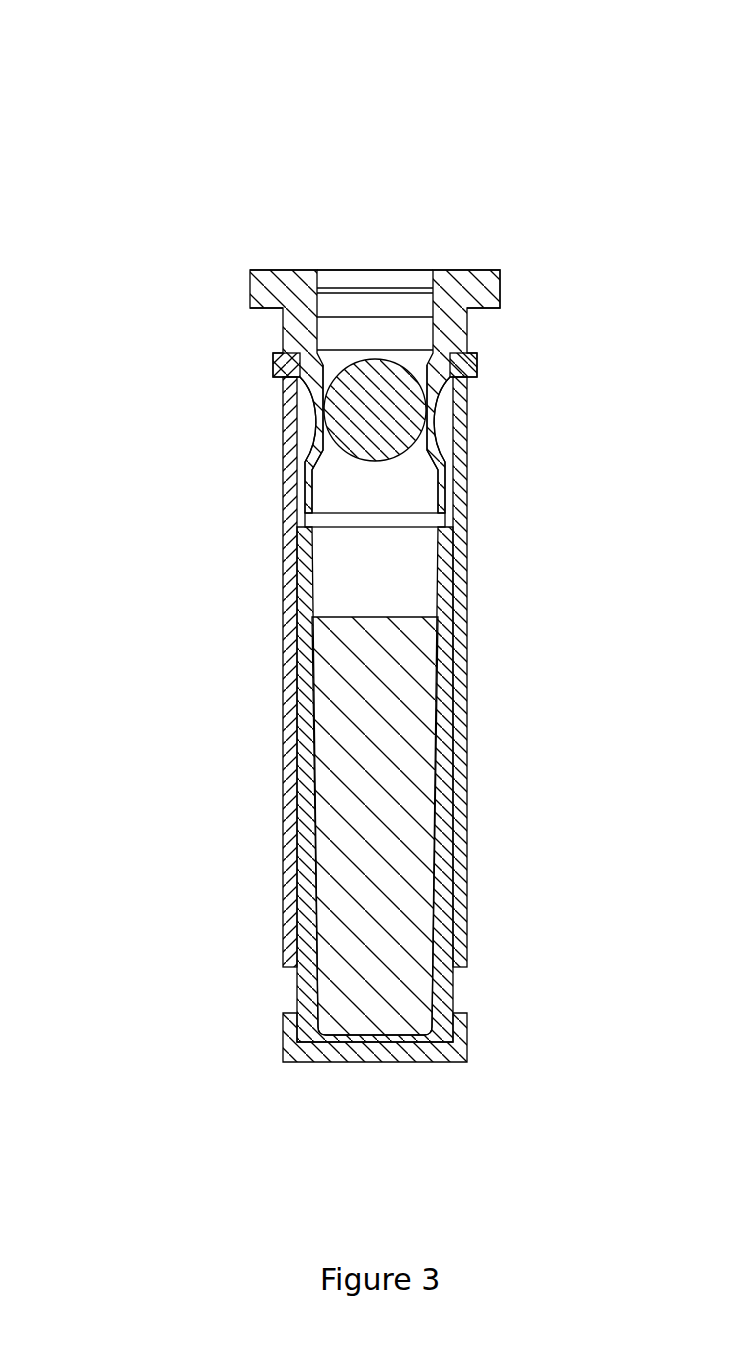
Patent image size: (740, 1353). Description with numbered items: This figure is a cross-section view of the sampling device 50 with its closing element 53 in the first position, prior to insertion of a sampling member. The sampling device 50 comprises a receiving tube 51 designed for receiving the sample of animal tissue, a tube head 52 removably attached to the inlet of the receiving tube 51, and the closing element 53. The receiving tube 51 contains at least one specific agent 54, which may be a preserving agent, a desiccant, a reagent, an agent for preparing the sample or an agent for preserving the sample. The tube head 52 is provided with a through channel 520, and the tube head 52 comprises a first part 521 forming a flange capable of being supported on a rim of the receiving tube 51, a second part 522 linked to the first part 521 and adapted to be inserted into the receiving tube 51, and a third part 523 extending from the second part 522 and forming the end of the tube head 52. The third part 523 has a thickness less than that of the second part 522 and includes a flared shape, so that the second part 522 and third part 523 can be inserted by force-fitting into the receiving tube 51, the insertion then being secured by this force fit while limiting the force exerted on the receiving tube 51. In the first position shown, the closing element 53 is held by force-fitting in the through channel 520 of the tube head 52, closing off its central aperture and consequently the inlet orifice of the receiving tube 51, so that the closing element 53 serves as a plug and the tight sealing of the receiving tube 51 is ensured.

The sampling device 50 is at (463, 192).
The receiving tube 51 is at (442, 698).
The tube head 52 is at (277, 308).
The through channel 520 is at (380, 342).
The first part 521 is at (302, 298).
The second part 522 is at (308, 373).
The third part 523 is at (315, 473).
The closing element 53 is at (393, 423).
The specific agent 54 is at (402, 935).